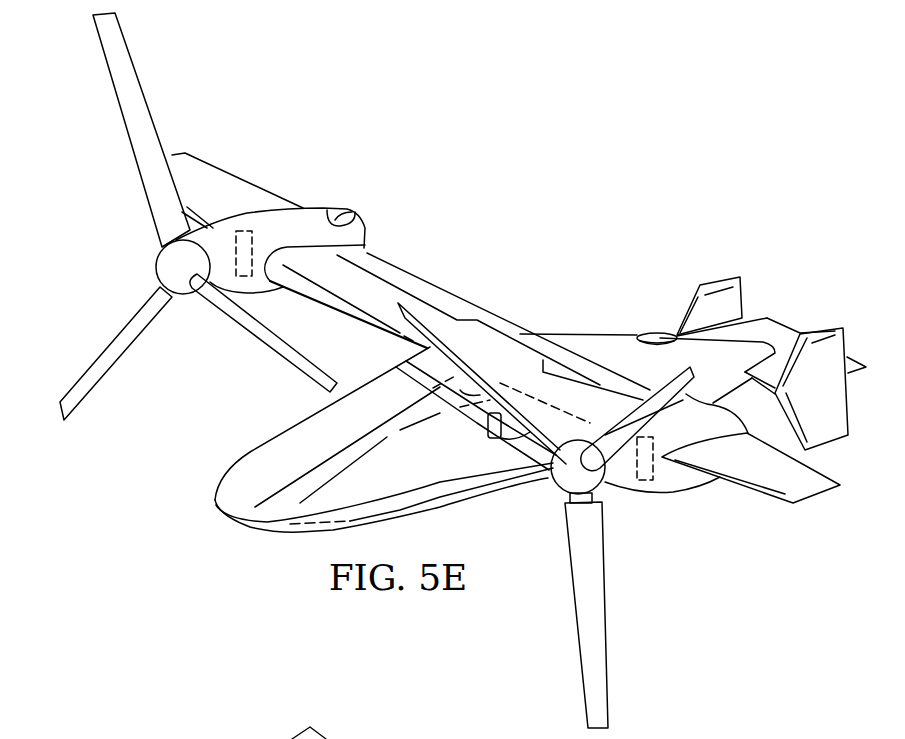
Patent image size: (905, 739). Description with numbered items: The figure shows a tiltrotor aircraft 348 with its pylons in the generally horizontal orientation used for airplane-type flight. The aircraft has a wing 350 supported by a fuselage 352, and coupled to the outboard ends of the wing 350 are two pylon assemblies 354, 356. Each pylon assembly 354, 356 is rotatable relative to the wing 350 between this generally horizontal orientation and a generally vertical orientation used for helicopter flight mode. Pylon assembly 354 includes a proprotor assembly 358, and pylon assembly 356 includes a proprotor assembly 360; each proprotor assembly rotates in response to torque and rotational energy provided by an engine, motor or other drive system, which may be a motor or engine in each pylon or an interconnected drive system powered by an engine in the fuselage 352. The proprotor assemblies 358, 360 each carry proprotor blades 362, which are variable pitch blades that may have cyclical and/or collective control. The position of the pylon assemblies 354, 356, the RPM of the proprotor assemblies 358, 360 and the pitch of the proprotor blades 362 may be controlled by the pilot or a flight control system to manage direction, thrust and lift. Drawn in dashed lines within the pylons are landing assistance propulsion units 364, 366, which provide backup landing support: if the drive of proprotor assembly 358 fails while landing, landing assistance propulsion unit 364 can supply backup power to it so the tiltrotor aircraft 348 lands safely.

The tiltrotor aircraft 348 is at (565, 198).
The wing 350 is at (488, 337).
The fuselage 352 is at (243, 465).
The pylon assembly 354 is at (687, 495).
The pylon assembly 356 is at (323, 208).
The proprotor assembly 358 is at (550, 483).
The proprotor assembly 360 is at (155, 270).
The proprotor blades 362 is at (130, 117).
The landing assistance propulsion unit 364 is at (617, 482).
The landing assistance propulsion unit 366 is at (236, 252).